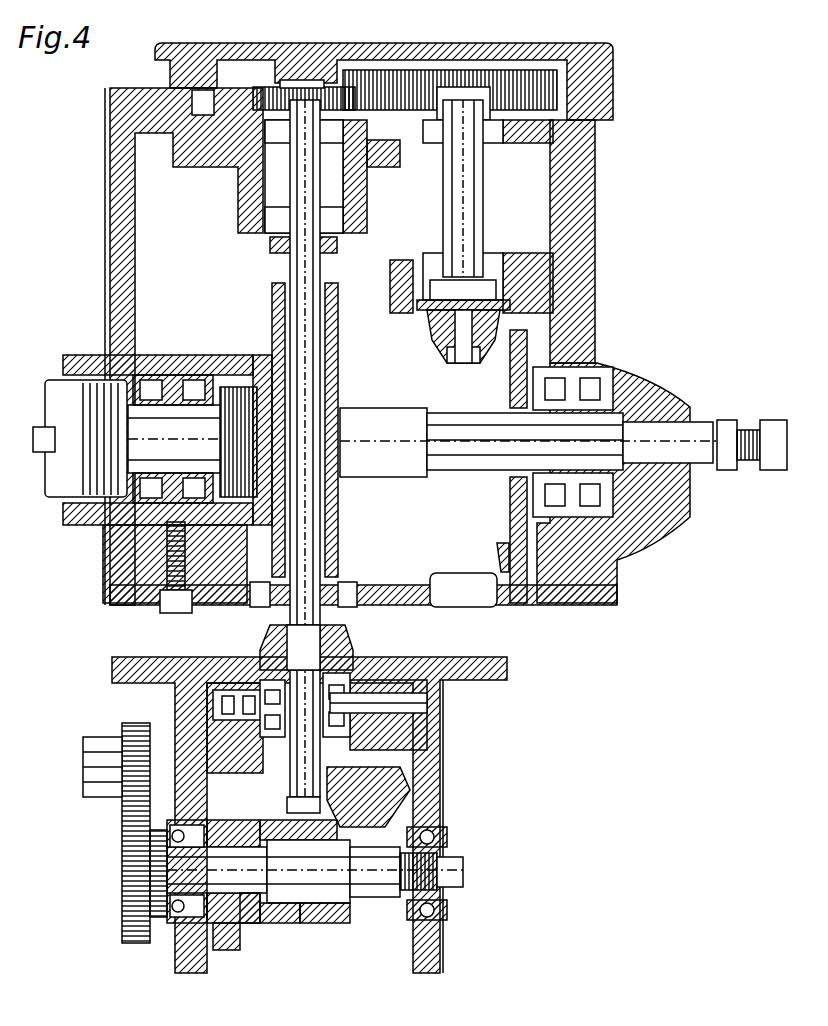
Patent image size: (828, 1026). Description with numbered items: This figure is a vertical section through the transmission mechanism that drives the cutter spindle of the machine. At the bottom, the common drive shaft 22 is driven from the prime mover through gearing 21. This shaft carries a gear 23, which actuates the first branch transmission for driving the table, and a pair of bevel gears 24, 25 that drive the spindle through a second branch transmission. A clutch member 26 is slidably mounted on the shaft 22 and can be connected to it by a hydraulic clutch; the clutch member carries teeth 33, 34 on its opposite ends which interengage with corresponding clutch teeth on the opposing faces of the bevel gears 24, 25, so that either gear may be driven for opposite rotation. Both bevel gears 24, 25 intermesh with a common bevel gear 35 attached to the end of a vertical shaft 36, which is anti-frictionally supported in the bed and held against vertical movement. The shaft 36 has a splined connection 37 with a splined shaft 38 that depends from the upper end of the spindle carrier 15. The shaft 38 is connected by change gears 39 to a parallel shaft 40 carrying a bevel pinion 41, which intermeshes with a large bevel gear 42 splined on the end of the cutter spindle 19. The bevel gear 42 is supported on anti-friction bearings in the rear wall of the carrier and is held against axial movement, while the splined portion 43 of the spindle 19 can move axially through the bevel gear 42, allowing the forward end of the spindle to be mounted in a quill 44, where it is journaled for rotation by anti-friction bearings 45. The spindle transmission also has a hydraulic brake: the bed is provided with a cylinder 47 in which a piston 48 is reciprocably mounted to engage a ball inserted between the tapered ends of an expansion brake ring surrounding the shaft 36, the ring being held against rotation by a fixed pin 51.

The spindle carrier 15 is at (590, 240).
The cutter spindle 19 is at (52, 380).
The gearing 21 is at (122, 805).
The common drive shaft 22 is at (372, 877).
The gear 23 is at (160, 923).
The bevel gear 24 is at (228, 950).
The bevel gear 25 is at (395, 930).
The clutch member 26 is at (278, 923).
The clutch teeth 33 is at (255, 923).
The clutch teeth 34 is at (335, 905).
The common bevel gear 35 is at (370, 795).
The vertical shaft 36 is at (330, 642).
The splined connection 37 is at (283, 290).
The splined shaft 38 is at (322, 290).
The change gears 39 is at (385, 70).
The parallel shaft 40 is at (483, 202).
The bevel pinion 41 is at (430, 325).
The large bevel gear 42 is at (497, 548).
The splined portion 43 is at (466, 460).
The quill 44 is at (72, 525).
The bearings 45 is at (176, 378).
The cylinder 47 is at (220, 690).
The piston 48 is at (262, 690).
The fixed pin 51 is at (380, 690).